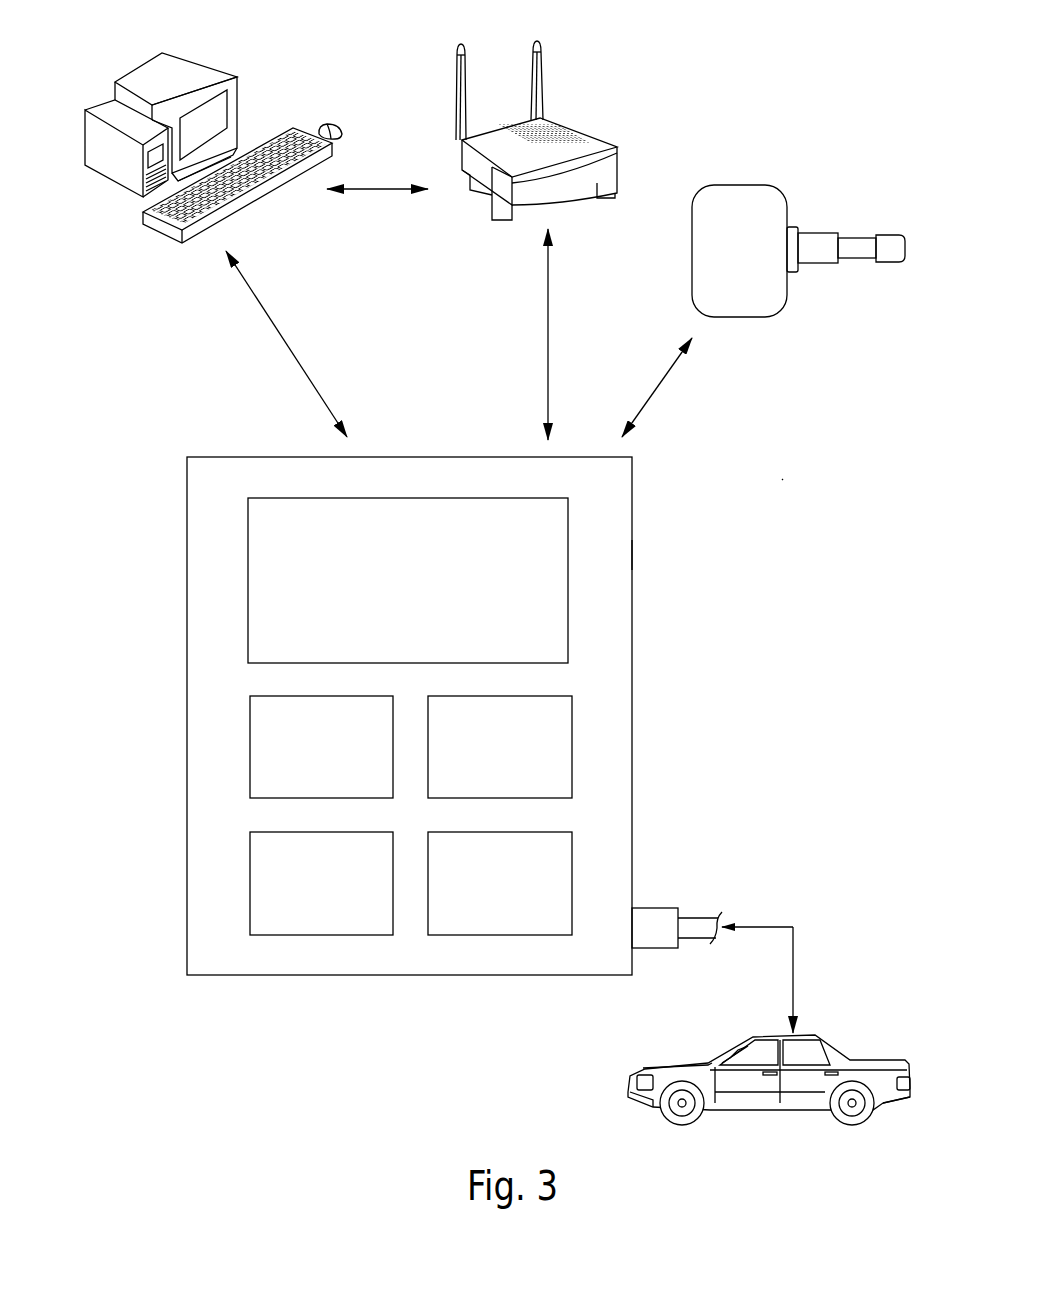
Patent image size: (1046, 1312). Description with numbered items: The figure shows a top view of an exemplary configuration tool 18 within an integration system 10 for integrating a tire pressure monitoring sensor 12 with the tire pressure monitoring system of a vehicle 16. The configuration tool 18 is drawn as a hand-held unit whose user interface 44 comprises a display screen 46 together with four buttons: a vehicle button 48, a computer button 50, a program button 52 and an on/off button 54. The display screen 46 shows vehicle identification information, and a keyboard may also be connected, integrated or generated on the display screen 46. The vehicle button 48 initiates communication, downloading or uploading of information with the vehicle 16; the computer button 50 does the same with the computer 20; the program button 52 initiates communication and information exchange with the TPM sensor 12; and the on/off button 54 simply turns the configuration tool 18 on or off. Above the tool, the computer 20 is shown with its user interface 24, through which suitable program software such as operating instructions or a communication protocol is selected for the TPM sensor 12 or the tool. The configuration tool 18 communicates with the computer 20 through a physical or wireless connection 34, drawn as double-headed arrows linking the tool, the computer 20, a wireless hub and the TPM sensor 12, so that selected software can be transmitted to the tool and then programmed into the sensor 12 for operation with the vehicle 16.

The integration system 10 is at (782, 479).
The tire pressure monitoring sensor 12 is at (691, 251).
The vehicle 16 is at (850, 1049).
The configuration tool 18 is at (632, 652).
The computer 20 is at (252, 61).
The user interface 24 is at (224, 112).
The physical or wireless connection 34 is at (383, 188).
The user interface 44 is at (621, 554).
The display screen 46 is at (248, 580).
The vehicle button 48 is at (250, 748).
The computer button 50 is at (572, 746).
The program button 52 is at (250, 883).
The on/off button 54 is at (572, 881).